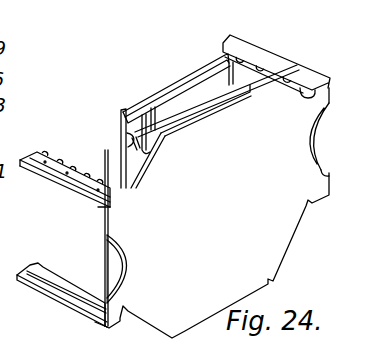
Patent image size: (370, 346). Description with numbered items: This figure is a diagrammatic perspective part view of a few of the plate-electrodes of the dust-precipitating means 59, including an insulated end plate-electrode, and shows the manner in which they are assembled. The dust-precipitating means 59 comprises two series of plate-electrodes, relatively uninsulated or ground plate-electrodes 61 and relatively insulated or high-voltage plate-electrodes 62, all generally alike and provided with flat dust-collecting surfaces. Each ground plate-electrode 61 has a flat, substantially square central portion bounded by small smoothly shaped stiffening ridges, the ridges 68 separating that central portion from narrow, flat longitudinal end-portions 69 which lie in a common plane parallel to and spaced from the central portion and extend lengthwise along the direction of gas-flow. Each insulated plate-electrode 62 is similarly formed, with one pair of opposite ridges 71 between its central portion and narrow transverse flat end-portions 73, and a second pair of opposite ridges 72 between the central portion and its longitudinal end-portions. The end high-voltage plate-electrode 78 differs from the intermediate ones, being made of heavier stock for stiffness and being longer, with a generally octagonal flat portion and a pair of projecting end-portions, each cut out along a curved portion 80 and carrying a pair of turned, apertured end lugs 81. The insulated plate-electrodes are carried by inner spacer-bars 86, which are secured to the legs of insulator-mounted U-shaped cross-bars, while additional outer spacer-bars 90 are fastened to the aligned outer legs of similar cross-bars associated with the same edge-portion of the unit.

The dust-precipitating means 59 is at (148, 70).
The uninsulated plate-electrode 61 is at (204, 86).
The insulated plate-electrode 62 is at (126, 146).
The ridges 68 is at (152, 124).
The longitudinal end-portions 69 is at (263, 70).
The ridges 71 is at (131, 160).
The ridges 72 is at (124, 116).
The transverse end-portions 73 is at (118, 183).
The end high-voltage plate-electrode 78 is at (233, 216).
The curved portion 80 is at (125, 250).
The end lugs 81 is at (97, 214).
The inner spacer-bars 86 is at (67, 173).
The outer spacer-bars 90 is at (42, 279).